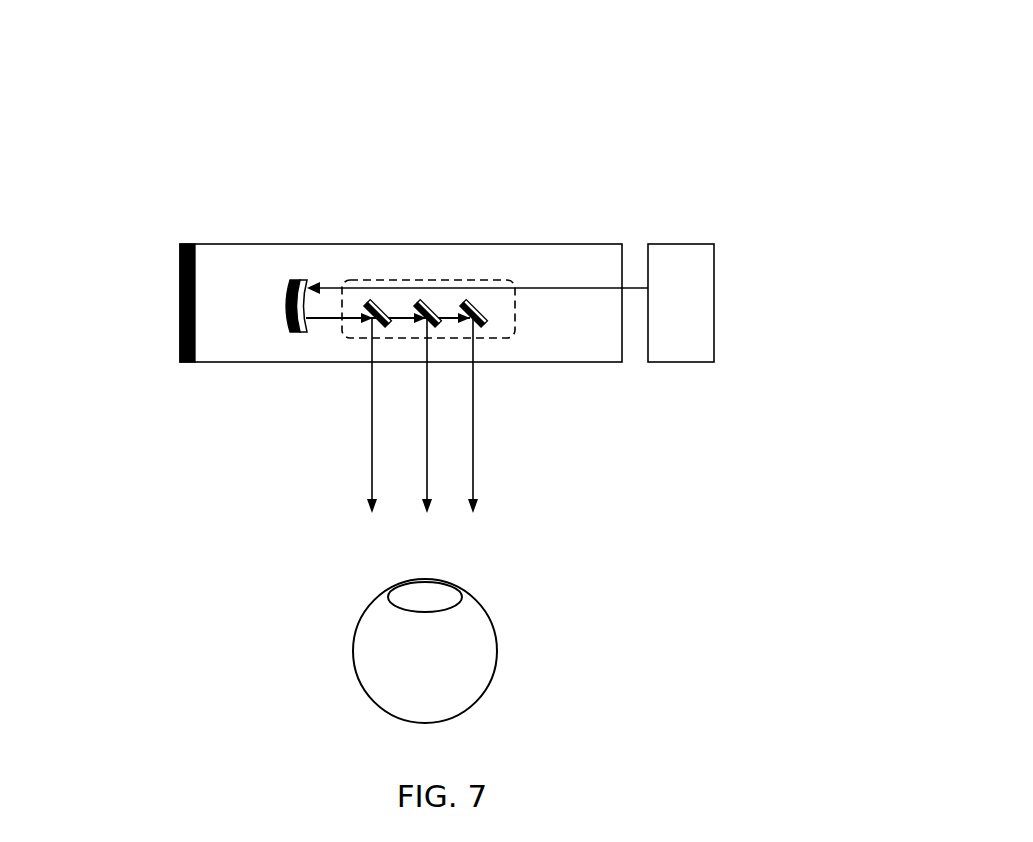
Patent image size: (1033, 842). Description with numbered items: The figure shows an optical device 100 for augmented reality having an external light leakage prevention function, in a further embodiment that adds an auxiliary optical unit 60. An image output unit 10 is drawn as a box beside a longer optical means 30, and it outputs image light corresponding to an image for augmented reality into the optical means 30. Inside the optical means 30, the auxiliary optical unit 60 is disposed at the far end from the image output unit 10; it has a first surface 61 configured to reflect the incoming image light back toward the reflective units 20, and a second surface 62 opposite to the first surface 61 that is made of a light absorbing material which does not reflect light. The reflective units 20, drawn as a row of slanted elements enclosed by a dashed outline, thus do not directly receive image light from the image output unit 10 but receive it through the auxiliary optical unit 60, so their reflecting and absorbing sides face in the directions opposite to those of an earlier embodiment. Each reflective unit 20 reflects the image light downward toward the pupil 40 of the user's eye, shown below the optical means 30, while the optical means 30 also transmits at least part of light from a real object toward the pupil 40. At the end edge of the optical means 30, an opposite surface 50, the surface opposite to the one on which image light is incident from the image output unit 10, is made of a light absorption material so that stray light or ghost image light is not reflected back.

The optical device 100 is at (690, 120).
The image output unit 10 is at (680, 244).
The reflective unit 20 is at (505, 338).
The optical means 30 is at (550, 244).
The pupil 40 is at (450, 582).
The opposite surface 50 is at (180, 263).
The auxiliary optical unit 60 is at (298, 333).
The first surface 61 is at (306, 280).
The second surface 62 is at (293, 280).